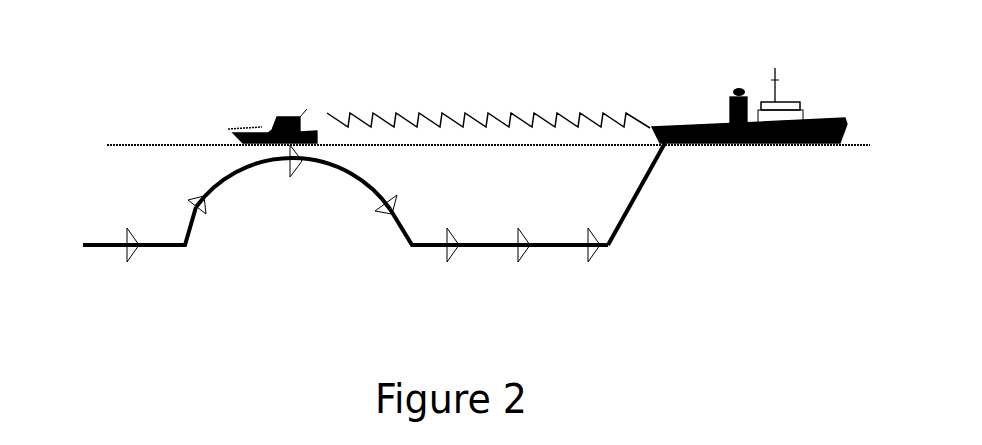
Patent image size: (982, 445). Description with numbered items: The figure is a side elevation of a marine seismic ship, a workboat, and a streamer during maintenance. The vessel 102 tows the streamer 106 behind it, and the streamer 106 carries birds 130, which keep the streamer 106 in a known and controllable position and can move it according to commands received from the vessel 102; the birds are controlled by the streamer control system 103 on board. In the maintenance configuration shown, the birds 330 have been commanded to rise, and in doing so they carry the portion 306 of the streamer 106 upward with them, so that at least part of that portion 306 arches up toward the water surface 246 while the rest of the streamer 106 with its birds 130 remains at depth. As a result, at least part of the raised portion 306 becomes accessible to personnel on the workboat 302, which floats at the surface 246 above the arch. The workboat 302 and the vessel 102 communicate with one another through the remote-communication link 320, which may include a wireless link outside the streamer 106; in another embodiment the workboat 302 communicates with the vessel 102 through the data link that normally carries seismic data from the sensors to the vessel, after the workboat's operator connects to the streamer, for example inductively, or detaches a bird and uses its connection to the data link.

The vessel 102 is at (749, 105).
The streamer control system 103 is at (796, 81).
The streamer 106 is at (102, 245).
The birds 130 is at (499, 246).
The water surface 246 is at (488, 136).
The workboat 302 is at (272, 120).
The portion of streamer 306 is at (240, 175).
The remote-communication link 320 is at (488, 112).
The birds 330 is at (222, 213).